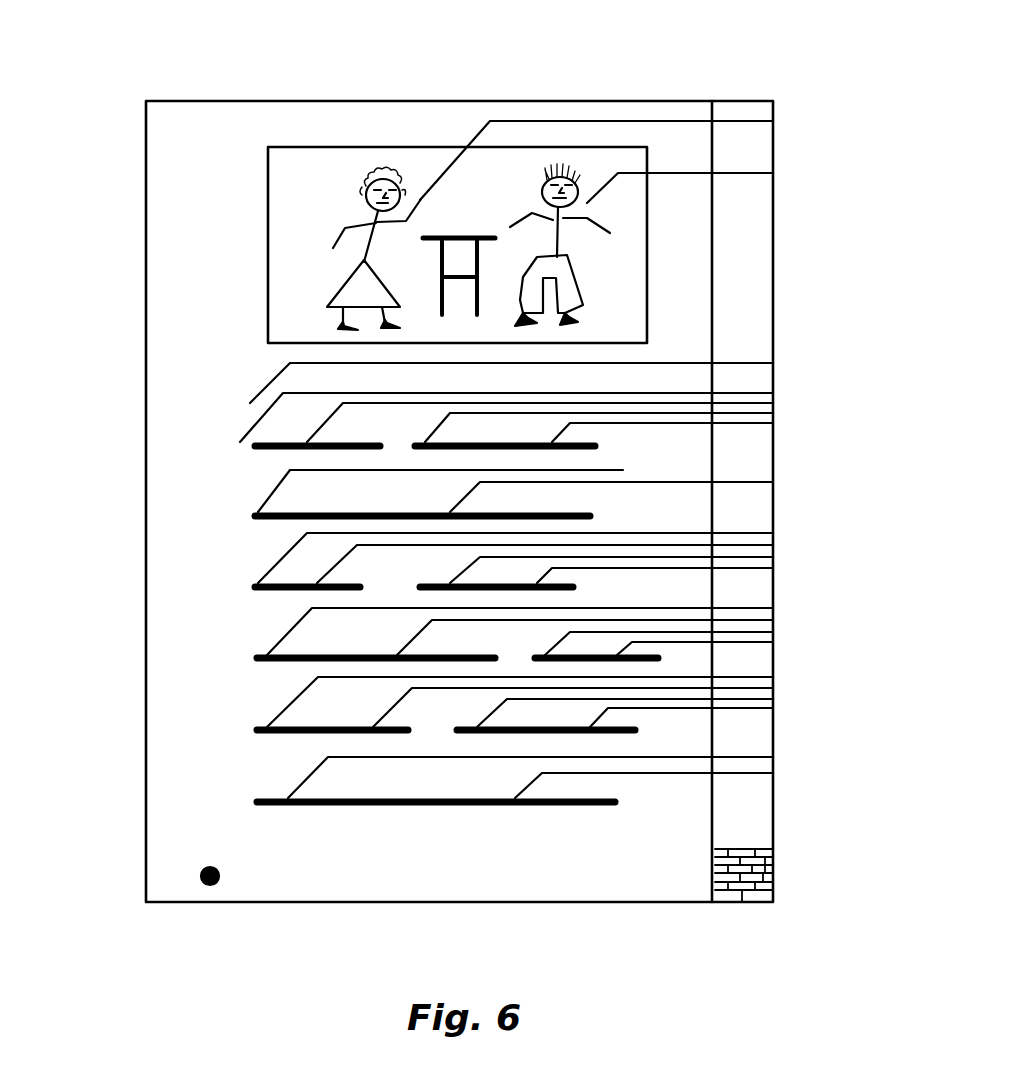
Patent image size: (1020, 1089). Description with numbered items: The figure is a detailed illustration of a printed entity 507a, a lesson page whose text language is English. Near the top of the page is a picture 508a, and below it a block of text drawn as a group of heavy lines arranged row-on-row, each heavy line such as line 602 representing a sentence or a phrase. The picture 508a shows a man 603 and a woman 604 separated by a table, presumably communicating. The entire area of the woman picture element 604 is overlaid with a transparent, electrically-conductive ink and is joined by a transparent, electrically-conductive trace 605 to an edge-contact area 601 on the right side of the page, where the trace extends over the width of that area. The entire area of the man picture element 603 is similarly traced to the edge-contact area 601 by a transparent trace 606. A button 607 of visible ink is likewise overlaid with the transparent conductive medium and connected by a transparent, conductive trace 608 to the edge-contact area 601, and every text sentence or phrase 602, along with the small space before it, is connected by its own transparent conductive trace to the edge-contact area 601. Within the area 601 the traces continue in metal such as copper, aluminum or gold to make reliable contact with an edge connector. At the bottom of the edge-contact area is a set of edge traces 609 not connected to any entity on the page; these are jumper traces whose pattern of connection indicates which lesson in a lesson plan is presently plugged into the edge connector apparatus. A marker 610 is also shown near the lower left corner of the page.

The printed entity 507a is at (200, 92).
The picture 508a is at (319, 136).
The edge-contact area 601 is at (745, 96).
The line 602 is at (273, 452).
The man 603 is at (577, 282).
The woman 604 is at (343, 283).
The transparent, electrically-conductive trace 605 is at (538, 118).
The transparent trace 606 is at (682, 173).
The button 607 is at (250, 403).
The transparent, conductive trace 608 is at (674, 361).
The set of edge traces 609 is at (800, 843).
The position marker 610 is at (208, 887).